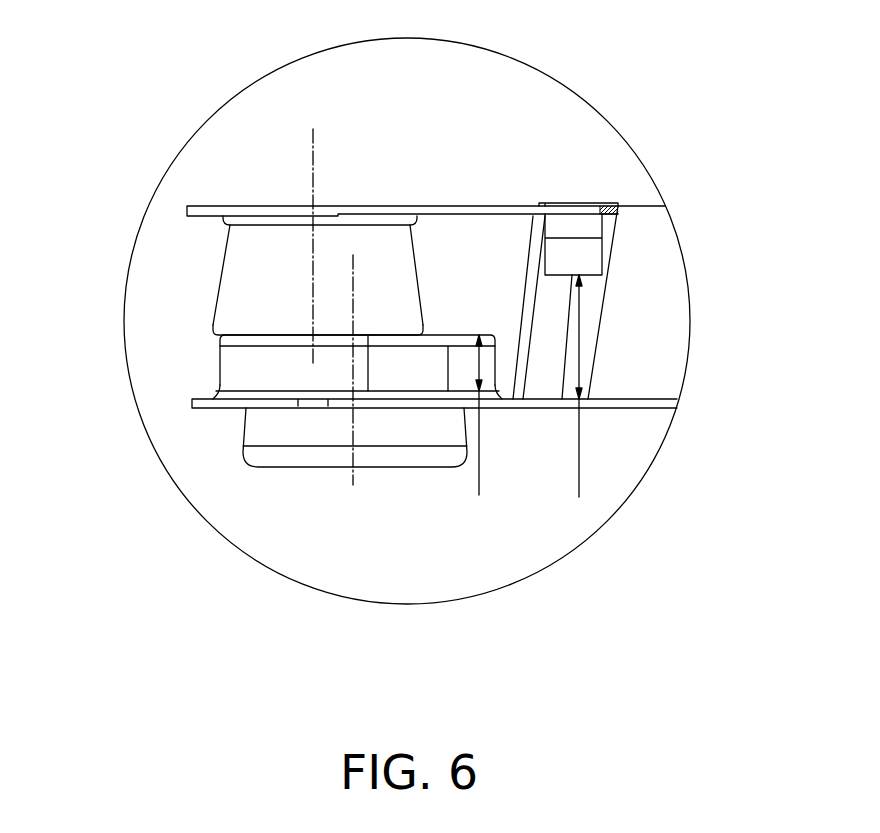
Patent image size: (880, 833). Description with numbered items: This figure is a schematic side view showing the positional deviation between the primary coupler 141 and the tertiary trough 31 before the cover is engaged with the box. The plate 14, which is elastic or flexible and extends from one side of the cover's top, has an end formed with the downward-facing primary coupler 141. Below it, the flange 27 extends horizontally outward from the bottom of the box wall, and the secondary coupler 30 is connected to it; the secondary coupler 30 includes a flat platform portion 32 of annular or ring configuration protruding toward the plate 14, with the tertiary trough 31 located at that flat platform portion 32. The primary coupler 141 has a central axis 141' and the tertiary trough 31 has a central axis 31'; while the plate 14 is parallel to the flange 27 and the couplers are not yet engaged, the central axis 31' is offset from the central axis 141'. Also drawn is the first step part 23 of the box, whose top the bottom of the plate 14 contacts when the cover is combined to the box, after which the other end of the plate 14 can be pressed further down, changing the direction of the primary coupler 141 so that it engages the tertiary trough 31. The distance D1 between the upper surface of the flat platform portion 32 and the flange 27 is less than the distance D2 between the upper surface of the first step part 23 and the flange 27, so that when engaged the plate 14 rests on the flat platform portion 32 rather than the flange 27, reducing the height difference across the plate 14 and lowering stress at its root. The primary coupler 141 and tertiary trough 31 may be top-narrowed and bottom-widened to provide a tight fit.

The plate 14 is at (470, 208).
The primary coupler 141 is at (233, 274).
The central axis 141' is at (313, 234).
The secondary coupler 30 is at (192, 401).
The tertiary trough 31 is at (260, 477).
The central axis 31' is at (352, 387).
The flat platform portion 32 is at (328, 362).
The flange 27 is at (505, 410).
The first step part 23 is at (603, 275).
The distance D1 is at (476, 431).
The distance D2 is at (577, 401).